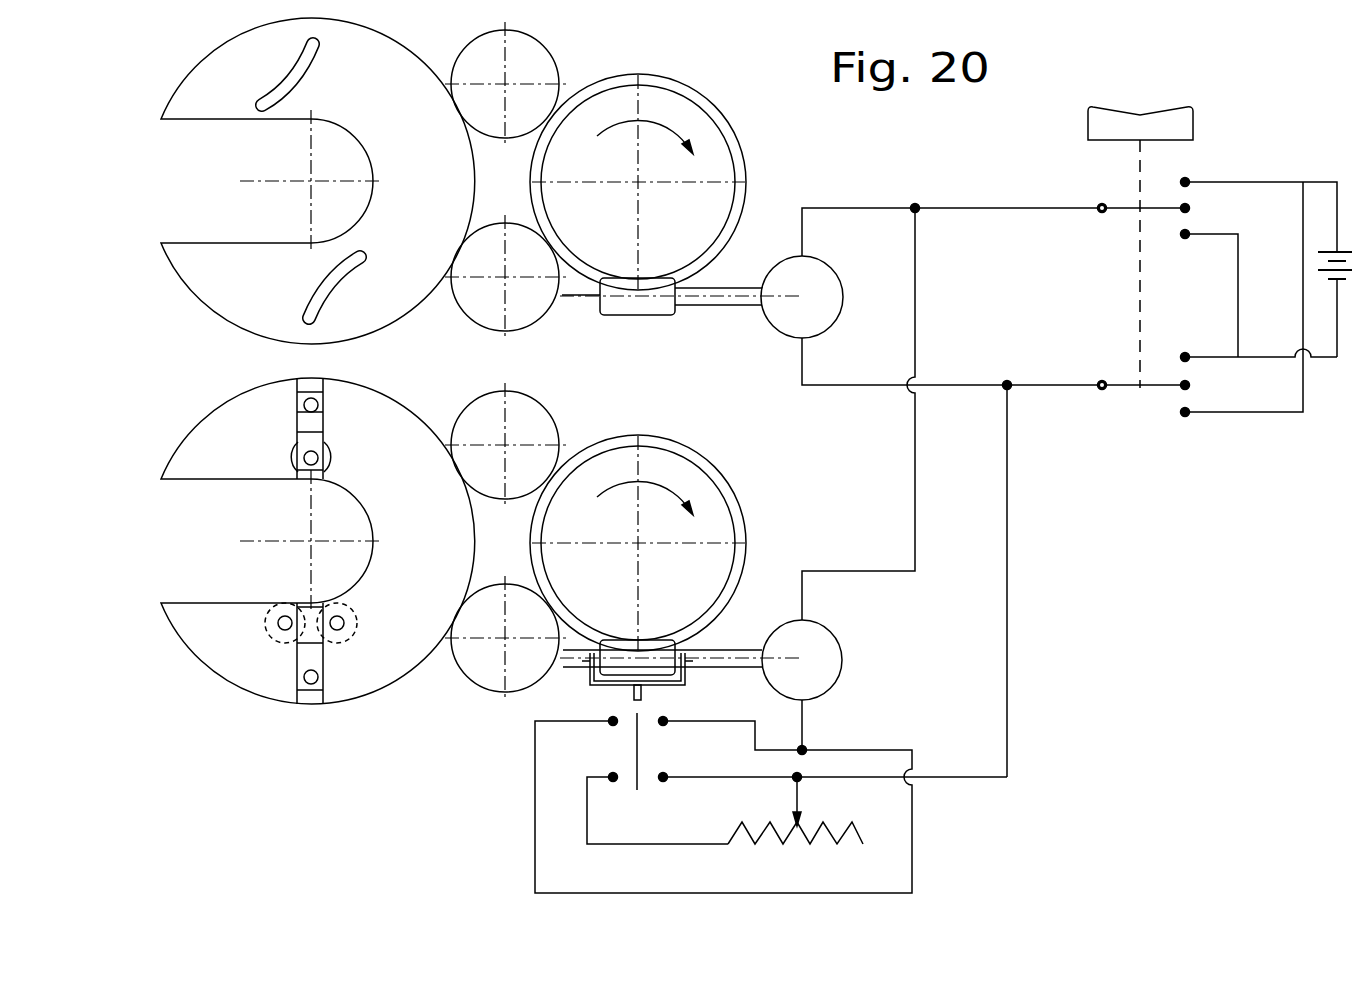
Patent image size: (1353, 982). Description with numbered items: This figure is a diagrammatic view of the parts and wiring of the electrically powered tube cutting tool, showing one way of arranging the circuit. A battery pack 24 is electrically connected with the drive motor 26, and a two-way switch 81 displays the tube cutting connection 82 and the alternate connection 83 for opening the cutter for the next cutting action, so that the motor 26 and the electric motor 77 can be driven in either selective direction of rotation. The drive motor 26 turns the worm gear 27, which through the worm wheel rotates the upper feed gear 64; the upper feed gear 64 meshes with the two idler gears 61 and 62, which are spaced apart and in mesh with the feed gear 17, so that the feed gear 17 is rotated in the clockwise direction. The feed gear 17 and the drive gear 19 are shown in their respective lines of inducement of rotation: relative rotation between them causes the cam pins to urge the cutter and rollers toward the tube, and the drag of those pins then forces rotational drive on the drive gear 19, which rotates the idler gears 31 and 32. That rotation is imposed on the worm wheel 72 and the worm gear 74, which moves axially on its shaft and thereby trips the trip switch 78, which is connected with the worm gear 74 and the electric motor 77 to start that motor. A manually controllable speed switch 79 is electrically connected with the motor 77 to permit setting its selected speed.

The feed gear 17 is at (418, 84).
The drive gear 19 is at (402, 432).
The battery pack 24 is at (1318, 250).
The drive motor 26 is at (778, 322).
The worm gear 27 is at (660, 316).
The idler gear 31 is at (468, 666).
The idler gear 32 is at (540, 440).
The idler gear 61 is at (534, 304).
The idler gear 62 is at (546, 82).
The upper feed gear 64 is at (724, 175).
The worm wheel 72 is at (710, 492).
The worm gear 74 is at (787, 650).
The electric motor 77 is at (790, 686).
The trip switch 78 is at (637, 713).
The speed switch 79 is at (795, 793).
The switch 81 is at (1140, 118).
The tube cutting connection 82 is at (1190, 181).
The alternate connection 83 is at (1186, 240).